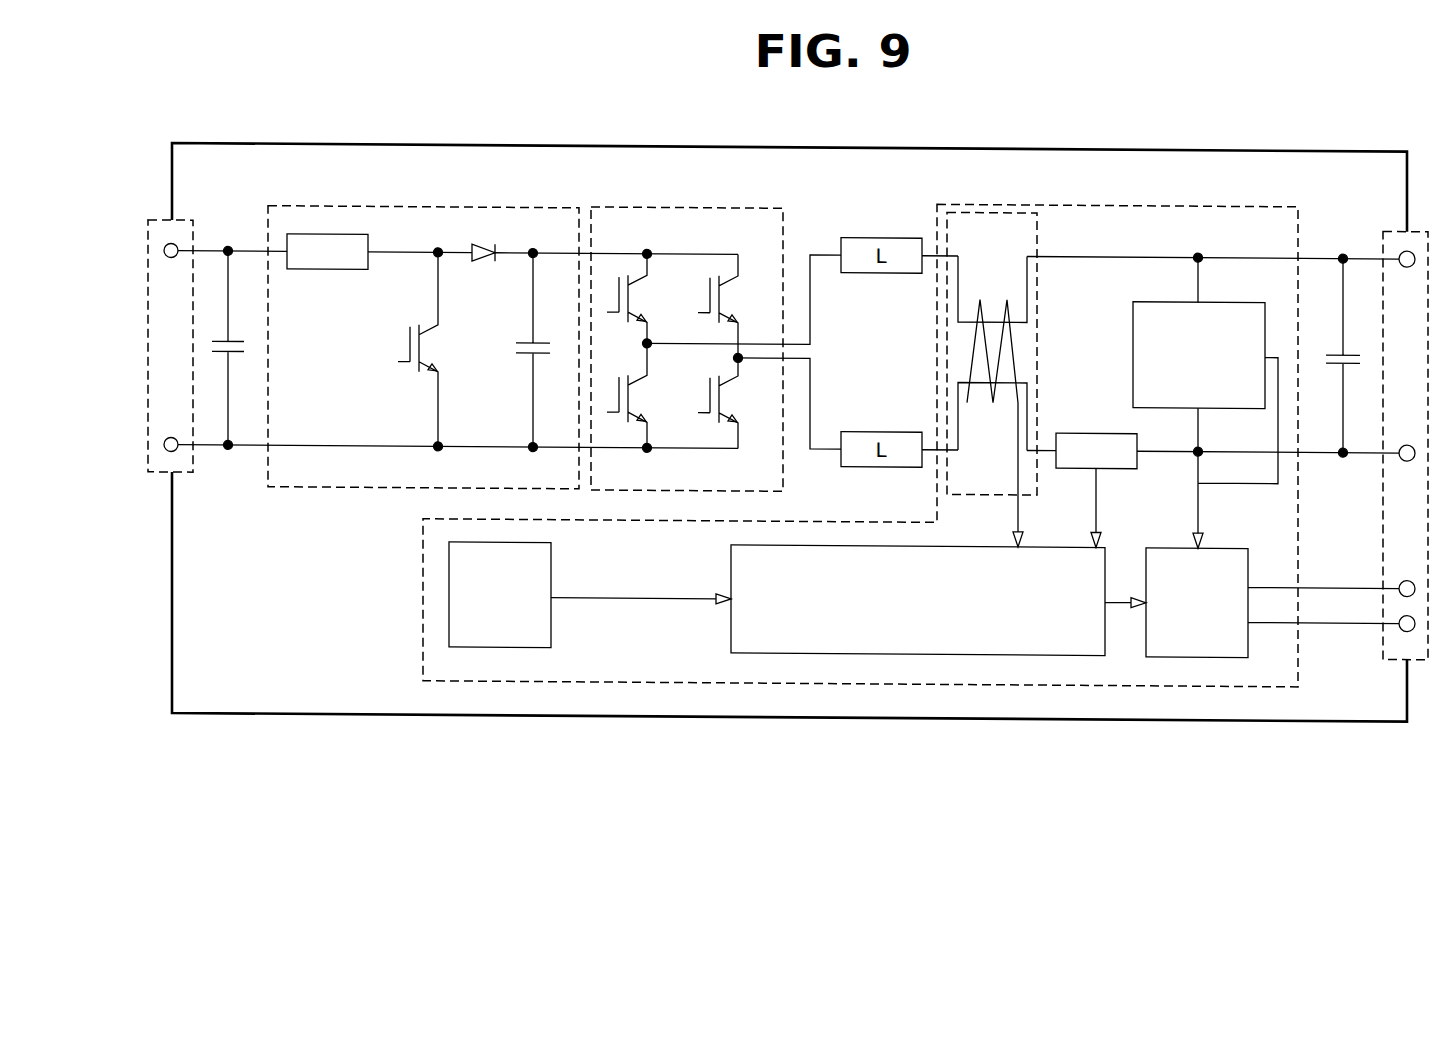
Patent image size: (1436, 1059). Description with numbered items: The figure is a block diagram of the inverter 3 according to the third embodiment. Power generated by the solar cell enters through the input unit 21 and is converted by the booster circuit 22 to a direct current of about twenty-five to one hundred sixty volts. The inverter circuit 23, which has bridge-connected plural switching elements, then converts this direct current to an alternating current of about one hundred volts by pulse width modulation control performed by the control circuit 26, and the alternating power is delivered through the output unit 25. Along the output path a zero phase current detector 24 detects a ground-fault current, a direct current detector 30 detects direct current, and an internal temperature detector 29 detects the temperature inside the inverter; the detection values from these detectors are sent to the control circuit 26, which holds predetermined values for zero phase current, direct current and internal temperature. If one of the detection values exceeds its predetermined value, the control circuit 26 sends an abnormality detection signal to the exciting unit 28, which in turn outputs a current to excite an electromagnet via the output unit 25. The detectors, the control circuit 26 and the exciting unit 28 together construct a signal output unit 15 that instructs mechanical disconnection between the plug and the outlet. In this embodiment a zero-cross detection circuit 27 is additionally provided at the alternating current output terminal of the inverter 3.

The inverter 3 is at (1013, 143).
The signal output unit 15 is at (698, 679).
The input unit 21 is at (178, 472).
The booster circuit 22 is at (450, 205).
The inverter circuit 23 is at (643, 204).
The zero phase current detector 24 is at (1040, 228).
The output unit 25 is at (1385, 232).
The control circuit 26 is at (907, 649).
The zero-cross detection circuit 27 is at (1133, 350).
The exciting unit 28 is at (1195, 650).
The internal temperature detector 29 is at (500, 645).
The direct current detector 30 is at (1102, 427).